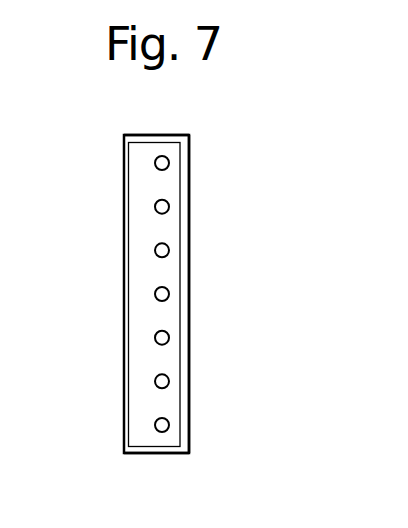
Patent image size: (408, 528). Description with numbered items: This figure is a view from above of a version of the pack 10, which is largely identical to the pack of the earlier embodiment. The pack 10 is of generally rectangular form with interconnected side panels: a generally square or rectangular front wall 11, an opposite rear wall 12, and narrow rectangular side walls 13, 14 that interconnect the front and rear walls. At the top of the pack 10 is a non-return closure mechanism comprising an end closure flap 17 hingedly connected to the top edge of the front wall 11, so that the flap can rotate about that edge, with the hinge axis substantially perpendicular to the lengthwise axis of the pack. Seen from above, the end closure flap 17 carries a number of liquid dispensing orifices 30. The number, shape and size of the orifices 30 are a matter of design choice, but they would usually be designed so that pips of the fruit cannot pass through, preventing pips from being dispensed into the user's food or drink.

The pack 10 is at (212, 117).
The front wall 11 is at (125, 340).
The rear wall 12 is at (189, 367).
The side wall 13 is at (153, 455).
The side wall 14 is at (147, 135).
The end closure flap 17 is at (145, 270).
The liquid dispensing orifices 30 is at (169, 163).